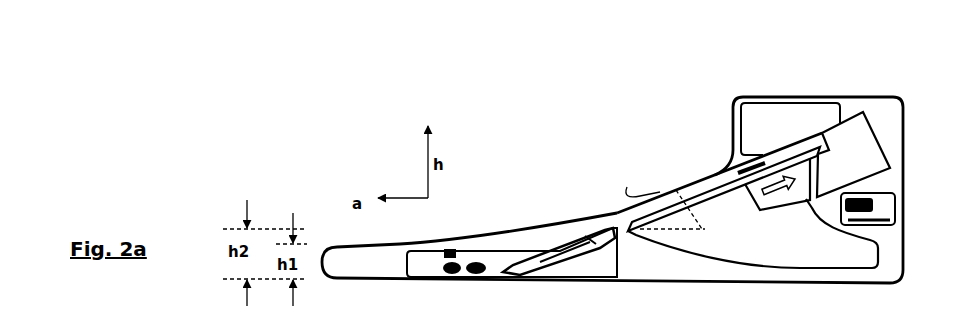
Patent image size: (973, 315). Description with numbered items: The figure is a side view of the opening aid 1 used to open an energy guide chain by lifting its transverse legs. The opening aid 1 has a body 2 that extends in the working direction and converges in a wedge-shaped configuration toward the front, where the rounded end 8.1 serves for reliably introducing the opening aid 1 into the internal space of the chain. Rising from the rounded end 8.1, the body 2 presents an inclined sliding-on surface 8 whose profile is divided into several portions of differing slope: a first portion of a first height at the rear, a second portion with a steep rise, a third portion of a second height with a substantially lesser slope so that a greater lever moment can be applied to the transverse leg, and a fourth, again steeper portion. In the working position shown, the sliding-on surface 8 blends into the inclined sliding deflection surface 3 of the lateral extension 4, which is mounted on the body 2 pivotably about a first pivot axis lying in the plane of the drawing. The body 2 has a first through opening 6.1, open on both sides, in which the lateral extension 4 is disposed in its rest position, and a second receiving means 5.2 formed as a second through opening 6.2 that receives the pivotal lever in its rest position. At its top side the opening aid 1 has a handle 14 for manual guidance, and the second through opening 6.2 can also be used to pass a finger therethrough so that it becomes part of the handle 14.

The opening aid 1 is at (570, 152).
The body 2 is at (906, 106).
The inclined sliding deflection surface 3 is at (682, 189).
The lateral extension 4 is at (700, 181).
The second receiving means 5.2 is at (873, 111).
The first through opening 6.1 is at (882, 268).
The second through opening 6.2 is at (865, 112).
The inclined sliding-on surface 8 is at (525, 235).
The rounded end 8.1 is at (332, 245).
The handle 14 is at (767, 95).